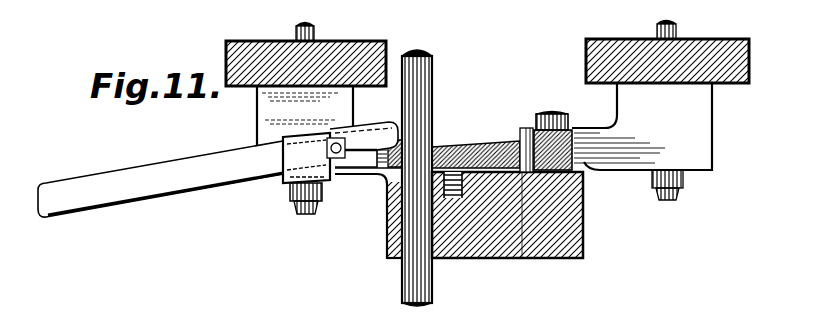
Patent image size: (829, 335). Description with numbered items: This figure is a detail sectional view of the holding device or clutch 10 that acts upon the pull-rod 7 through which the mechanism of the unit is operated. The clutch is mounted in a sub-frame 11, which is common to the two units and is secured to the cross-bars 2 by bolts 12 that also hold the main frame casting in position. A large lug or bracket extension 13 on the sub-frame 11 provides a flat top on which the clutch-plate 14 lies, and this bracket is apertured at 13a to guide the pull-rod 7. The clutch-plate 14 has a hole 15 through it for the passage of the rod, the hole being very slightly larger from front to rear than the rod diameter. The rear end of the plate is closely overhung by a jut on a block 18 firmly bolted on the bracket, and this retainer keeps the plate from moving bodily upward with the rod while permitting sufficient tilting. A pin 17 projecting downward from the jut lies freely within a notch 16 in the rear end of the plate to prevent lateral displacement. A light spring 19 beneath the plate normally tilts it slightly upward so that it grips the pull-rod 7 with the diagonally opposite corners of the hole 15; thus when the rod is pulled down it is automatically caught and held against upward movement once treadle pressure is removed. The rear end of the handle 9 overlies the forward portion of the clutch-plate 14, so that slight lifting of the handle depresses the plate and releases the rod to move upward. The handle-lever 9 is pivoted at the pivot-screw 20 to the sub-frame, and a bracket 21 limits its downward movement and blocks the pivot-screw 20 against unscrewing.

The cross-bars 2 is at (224, 47).
The pull-rod 7 is at (434, 284).
The handle 9 is at (123, 205).
The holding device 10 is at (375, 182).
The sub-frame 11 is at (613, 173).
The bolts 12 is at (295, 30).
The bracket extension 13 is at (570, 237).
The aperture 13a is at (393, 262).
The clutch-plate 14 is at (490, 148).
The hole 15 is at (440, 144).
The notch 16 is at (523, 172).
The pin 17 is at (527, 126).
The block 18 is at (572, 132).
The spring 19 is at (448, 198).
The pivot-screw 20 is at (284, 170).
The bracket 21 is at (295, 148).